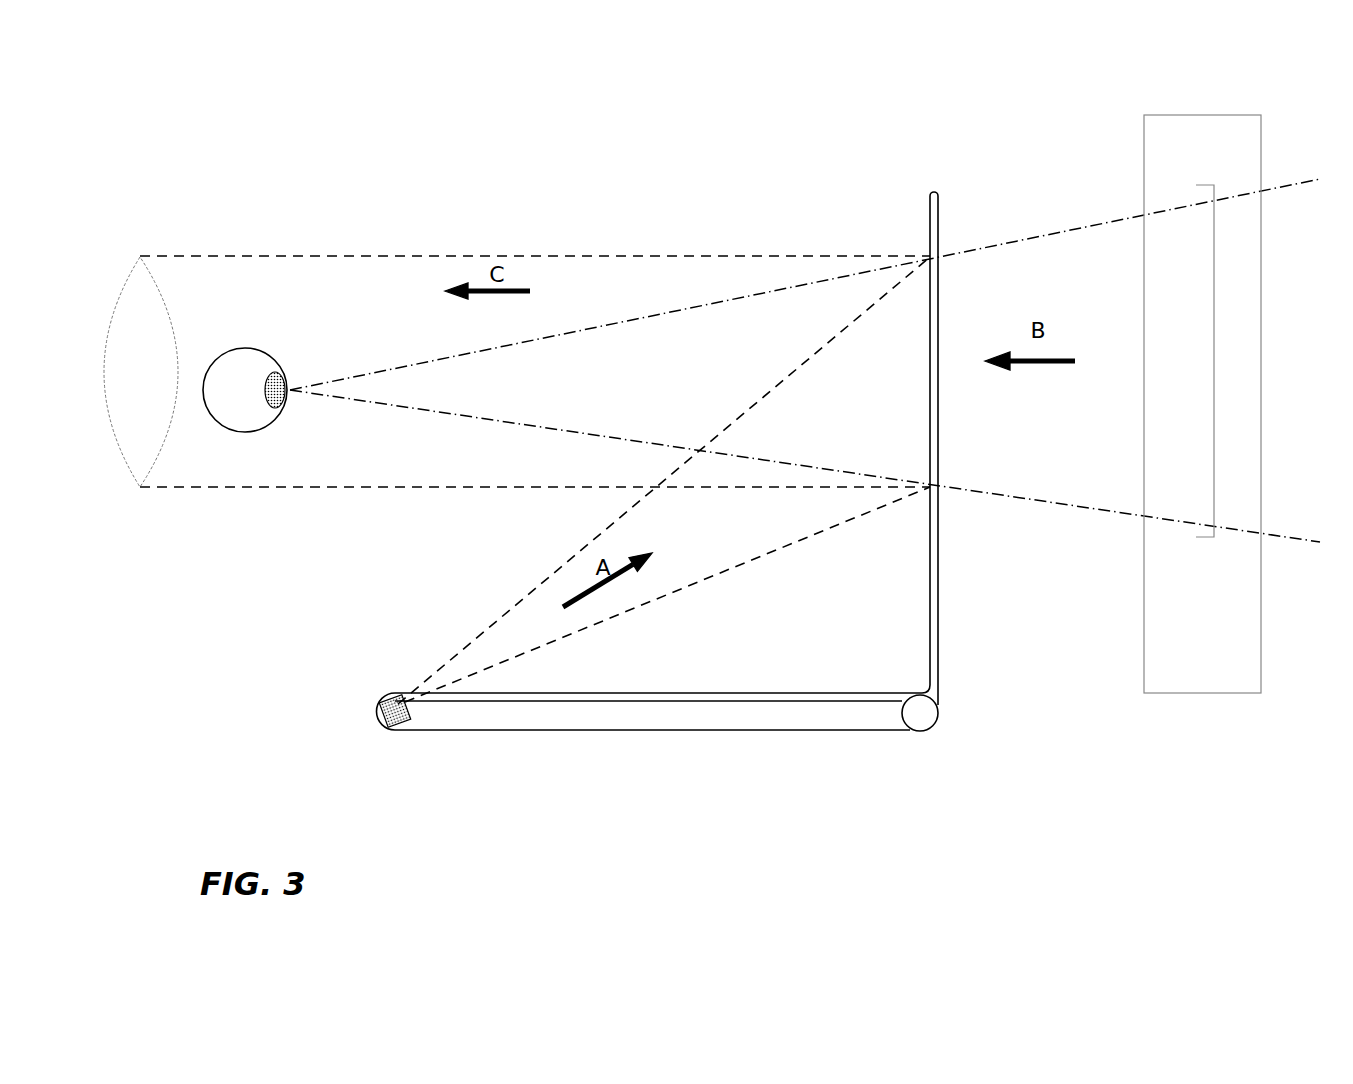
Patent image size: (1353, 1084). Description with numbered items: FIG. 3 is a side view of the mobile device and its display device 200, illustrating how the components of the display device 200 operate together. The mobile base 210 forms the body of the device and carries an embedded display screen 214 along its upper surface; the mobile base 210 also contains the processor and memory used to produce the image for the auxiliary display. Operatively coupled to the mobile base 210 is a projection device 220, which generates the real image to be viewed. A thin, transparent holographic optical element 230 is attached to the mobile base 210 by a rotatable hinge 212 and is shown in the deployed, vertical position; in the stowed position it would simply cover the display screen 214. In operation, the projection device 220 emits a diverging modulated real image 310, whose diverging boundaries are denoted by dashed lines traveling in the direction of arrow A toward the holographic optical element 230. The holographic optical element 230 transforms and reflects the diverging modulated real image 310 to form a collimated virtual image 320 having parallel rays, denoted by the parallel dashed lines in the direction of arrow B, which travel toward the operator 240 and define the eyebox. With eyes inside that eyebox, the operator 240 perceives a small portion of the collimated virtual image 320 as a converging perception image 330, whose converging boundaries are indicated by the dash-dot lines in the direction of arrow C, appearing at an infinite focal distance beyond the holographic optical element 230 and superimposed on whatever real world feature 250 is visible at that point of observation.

The display device 200 is at (718, 461).
The mobile base 210 is at (692, 710).
The rotatable hinge 212 is at (922, 710).
The embedded display screen 214 is at (587, 693).
The projection device 220 is at (400, 712).
The holographic optical element 230 is at (940, 194).
The operator 240 is at (230, 378).
The real world feature 250 is at (1195, 623).
The diverging modulated real image 310 is at (555, 647).
The collimated virtual image 320 is at (280, 487).
The converging perception image 330 is at (512, 343).